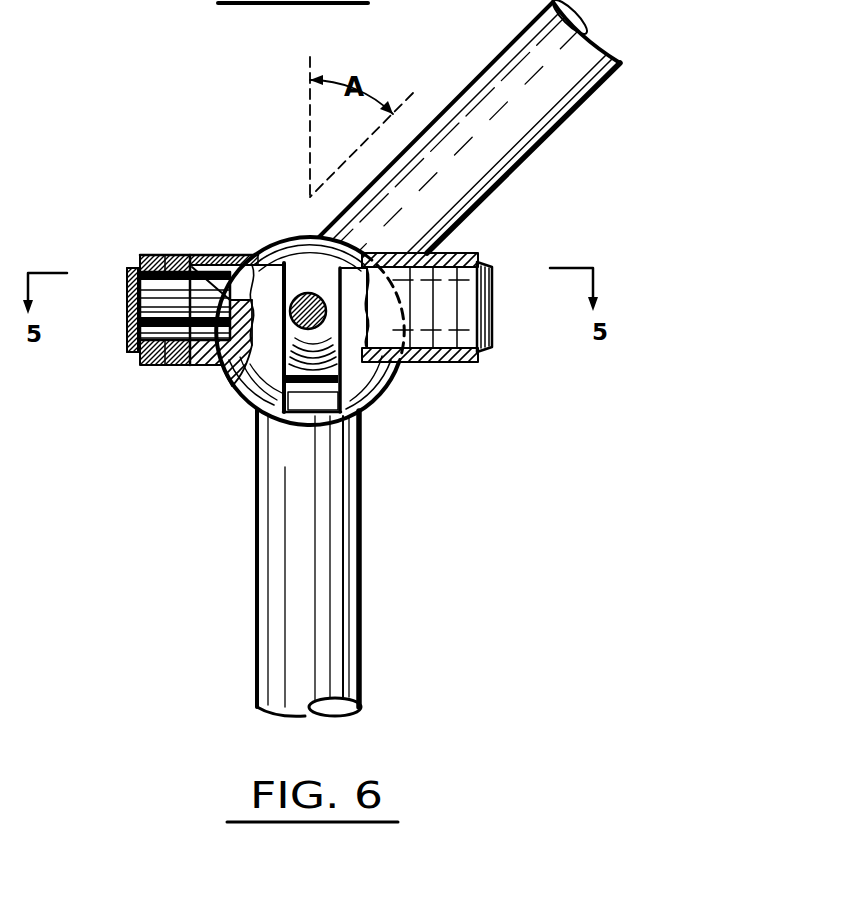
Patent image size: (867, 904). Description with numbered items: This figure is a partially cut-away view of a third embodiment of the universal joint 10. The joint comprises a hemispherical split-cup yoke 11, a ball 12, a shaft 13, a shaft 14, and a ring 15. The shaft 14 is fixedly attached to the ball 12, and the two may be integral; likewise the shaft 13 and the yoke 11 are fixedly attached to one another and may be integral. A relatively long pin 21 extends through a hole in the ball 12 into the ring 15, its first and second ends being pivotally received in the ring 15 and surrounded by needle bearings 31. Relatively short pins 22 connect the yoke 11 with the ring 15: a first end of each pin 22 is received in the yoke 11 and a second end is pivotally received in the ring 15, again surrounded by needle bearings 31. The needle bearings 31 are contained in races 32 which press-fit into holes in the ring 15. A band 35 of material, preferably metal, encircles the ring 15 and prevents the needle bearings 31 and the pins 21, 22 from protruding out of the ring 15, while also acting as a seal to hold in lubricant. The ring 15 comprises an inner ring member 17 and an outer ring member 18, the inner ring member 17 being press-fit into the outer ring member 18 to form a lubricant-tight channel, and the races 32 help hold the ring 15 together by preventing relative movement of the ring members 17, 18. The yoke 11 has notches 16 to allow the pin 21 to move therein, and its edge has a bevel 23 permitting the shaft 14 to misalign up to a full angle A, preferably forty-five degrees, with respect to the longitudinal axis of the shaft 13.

The universal joint 10 is at (410, 456).
The hemispherical split-cup yoke 11 is at (390, 393).
The ball 12 is at (257, 270).
The shaft 13 is at (254, 510).
The shaft 14 is at (570, 118).
The ring 15 is at (478, 255).
The notches 16 is at (322, 283).
The inner ring member 17 is at (176, 366).
The outer ring member 18 is at (160, 366).
The pin 21 is at (290, 292).
The pins 22 is at (125, 300).
The bevel 23 is at (215, 257).
The needle bearings 31 is at (141, 268).
The races 32 is at (128, 270).
The band 35 is at (126, 327).